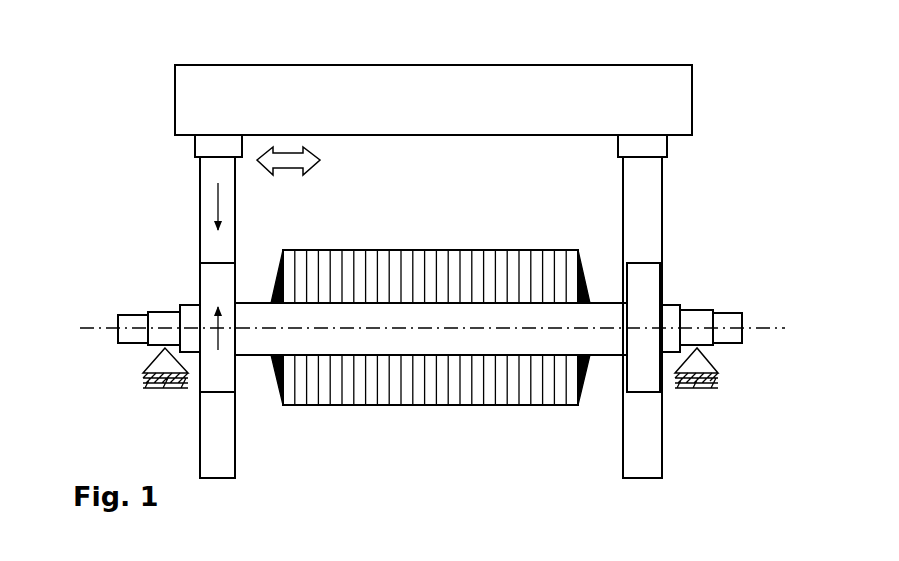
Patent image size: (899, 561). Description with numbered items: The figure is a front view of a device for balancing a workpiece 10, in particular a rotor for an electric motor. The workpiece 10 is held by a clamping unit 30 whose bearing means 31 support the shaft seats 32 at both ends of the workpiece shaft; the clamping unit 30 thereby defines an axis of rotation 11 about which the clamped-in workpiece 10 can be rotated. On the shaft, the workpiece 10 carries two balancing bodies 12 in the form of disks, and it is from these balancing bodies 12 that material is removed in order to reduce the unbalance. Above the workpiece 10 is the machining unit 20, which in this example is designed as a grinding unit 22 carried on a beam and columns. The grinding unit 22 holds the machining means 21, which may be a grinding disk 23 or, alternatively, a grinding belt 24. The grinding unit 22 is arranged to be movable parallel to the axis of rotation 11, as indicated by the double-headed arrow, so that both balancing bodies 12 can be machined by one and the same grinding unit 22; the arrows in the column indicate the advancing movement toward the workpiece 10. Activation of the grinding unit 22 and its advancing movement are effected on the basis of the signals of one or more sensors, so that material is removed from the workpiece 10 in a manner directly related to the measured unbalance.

The workpiece 10 is at (480, 428).
The axis of rotation 11 is at (778, 328).
The balancing body 12 is at (218, 287).
The machining unit 20 is at (213, 147).
The machining means 21 is at (207, 193).
The grinding unit 22 is at (435, 100).
The grinding disk 23 is at (139, 260).
The grinding belt 24 is at (205, 243).
The clamping unit 30 is at (447, 397).
The bearing means 31 is at (167, 360).
The shaft seat 32 is at (168, 322).